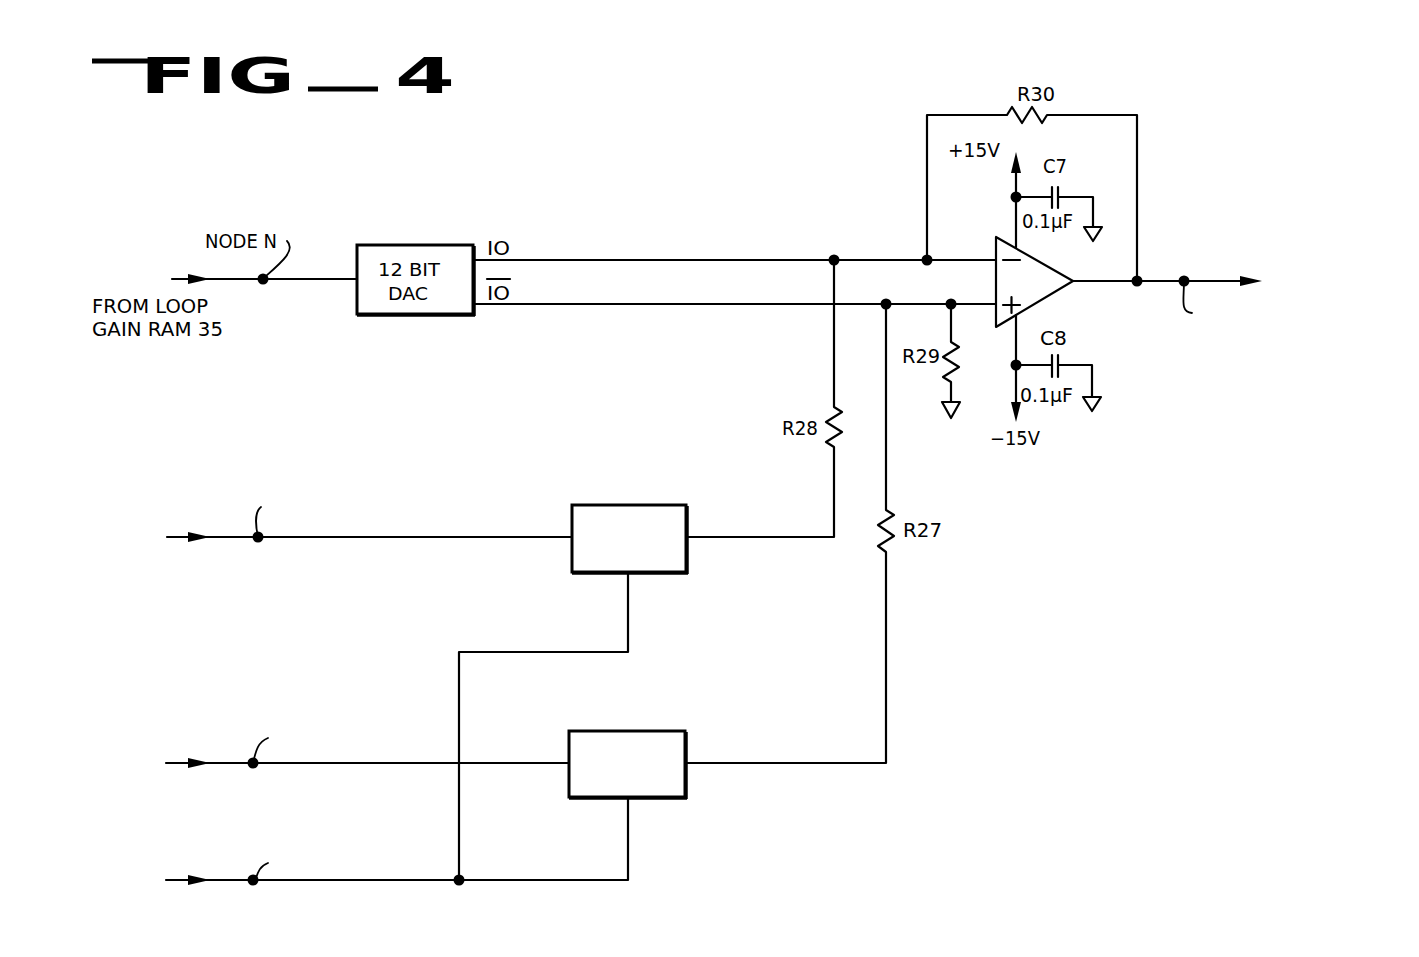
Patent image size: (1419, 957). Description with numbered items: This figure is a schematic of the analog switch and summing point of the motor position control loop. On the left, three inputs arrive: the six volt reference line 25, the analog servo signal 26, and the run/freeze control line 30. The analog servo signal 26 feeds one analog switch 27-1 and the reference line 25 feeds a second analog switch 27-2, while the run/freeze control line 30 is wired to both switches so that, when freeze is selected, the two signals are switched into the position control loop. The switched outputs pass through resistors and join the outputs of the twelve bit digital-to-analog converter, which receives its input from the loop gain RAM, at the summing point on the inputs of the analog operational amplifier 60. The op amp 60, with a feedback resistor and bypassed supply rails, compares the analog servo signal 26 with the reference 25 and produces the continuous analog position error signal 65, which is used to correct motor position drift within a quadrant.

The analog servo (Anlgsrvo) signal 26 is at (217, 535).
The six volt reference (+6 V ref) line 25 is at (216, 762).
The run/freeze control line 30 is at (216, 878).
The analog position error signal 65 is at (1208, 281).
The analog operational amplifier 60 is at (1044, 298).
The analog switch 27-1 is at (686, 560).
The analog switch 27-2 is at (686, 787).